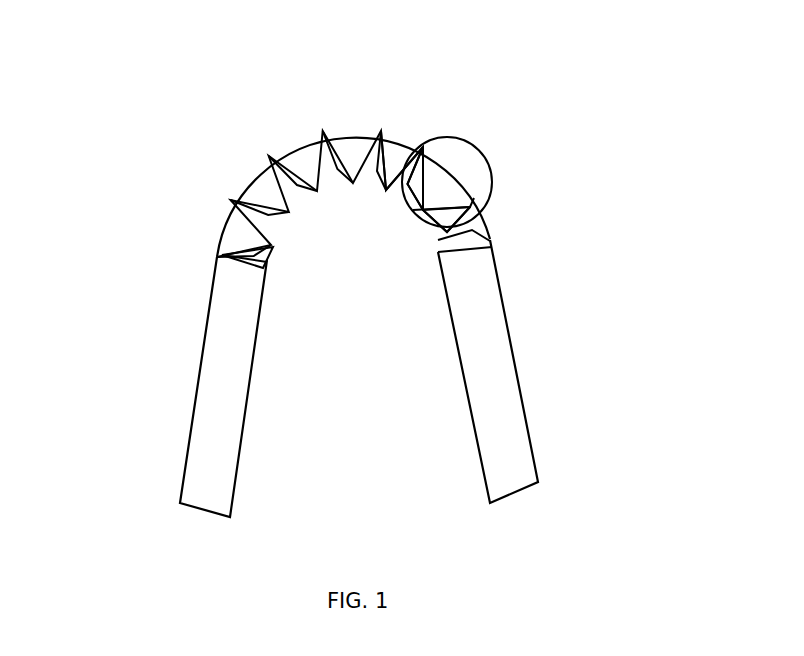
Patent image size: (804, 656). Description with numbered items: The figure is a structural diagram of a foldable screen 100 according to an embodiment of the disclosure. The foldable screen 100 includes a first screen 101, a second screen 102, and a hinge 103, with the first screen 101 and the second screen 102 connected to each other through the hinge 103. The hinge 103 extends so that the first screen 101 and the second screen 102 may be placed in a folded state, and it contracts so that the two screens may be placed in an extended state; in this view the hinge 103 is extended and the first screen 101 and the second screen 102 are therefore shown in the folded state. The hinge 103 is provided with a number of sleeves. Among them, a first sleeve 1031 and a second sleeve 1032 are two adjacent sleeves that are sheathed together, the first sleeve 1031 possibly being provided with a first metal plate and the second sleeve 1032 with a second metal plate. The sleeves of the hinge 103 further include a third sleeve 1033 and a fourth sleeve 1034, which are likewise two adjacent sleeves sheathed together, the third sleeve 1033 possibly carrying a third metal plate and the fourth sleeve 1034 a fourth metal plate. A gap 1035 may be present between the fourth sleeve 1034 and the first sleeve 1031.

The foldable screen 100 is at (256, 57).
The first screen 101 is at (218, 384).
The second screen 102 is at (493, 390).
The hinge 103 is at (236, 190).
The first sleeve 1031 is at (413, 210).
The second sleeve 1032 is at (487, 160).
The third sleeve 1033 is at (398, 152).
The fourth sleeve 1034 is at (420, 150).
The gap 1035 is at (420, 150).